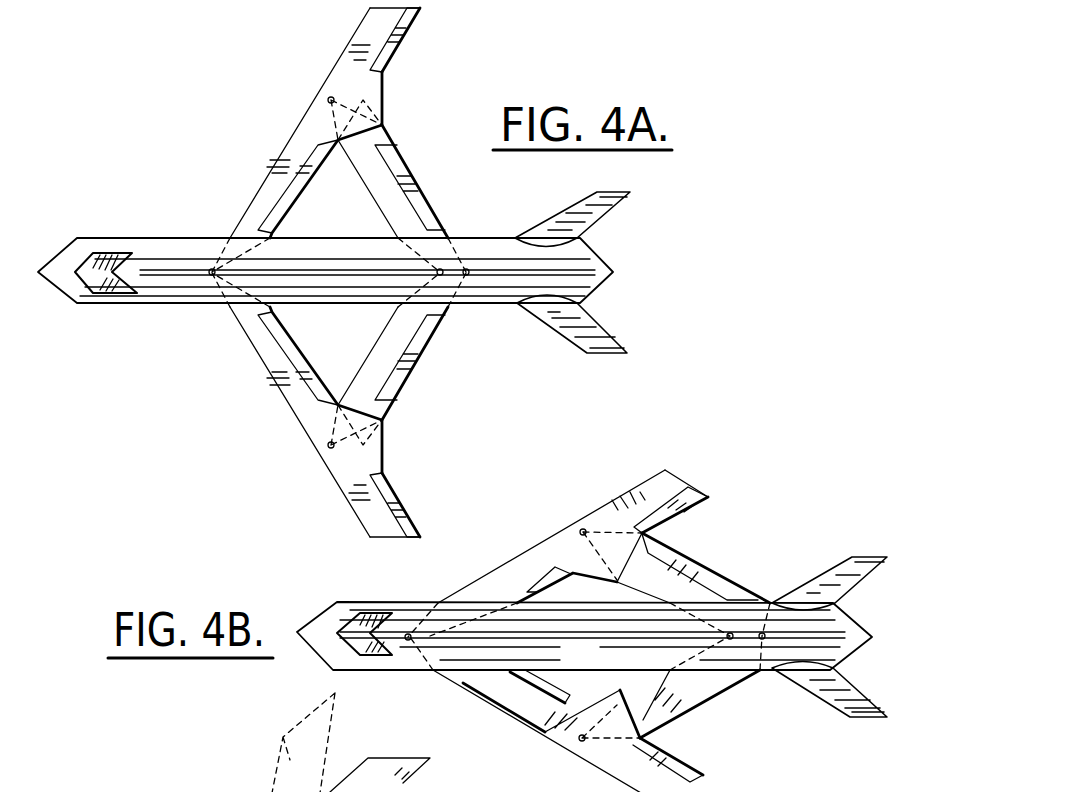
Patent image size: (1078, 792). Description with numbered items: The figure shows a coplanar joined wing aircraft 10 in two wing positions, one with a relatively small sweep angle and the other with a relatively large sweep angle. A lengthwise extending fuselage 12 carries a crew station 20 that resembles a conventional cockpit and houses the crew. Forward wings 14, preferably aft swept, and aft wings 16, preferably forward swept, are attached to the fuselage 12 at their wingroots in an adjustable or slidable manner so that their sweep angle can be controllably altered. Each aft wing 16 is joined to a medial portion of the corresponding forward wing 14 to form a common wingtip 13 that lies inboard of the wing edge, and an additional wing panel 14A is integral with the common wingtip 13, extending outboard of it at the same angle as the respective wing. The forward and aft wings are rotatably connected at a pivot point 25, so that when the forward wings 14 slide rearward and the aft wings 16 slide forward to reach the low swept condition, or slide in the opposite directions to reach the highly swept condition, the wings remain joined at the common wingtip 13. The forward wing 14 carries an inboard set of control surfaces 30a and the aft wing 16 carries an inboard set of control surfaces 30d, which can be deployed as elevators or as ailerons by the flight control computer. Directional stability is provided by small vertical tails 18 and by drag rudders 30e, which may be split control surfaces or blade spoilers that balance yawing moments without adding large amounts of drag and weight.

In FIG. 4A, the joined wing aircraft 10 is at (201, 155).
In FIG. 4B, the joined wing aircraft 10 is at (778, 532).
In FIG. 4A, the fuselage 12 is at (157, 252).
In FIG. 4B, the fuselage 12 is at (365, 603).
In FIG. 4A, the common wingtip 13 is at (330, 118).
In FIG. 4A, the forward wing 14 is at (290, 163).
In FIG. 4B, the forward wing 14 is at (520, 563).
In FIG. 4A, the additional wing panel 14A is at (362, 22).
In FIG. 4B, the additional wing panel 14A is at (665, 485).
In FIG. 4A, the aft wing 16 is at (427, 230).
In FIG. 4B, the aft wing 16 is at (747, 595).
In FIG. 4A, the tail 18 is at (577, 207).
In FIG. 4B, the tail 18 is at (843, 567).
In FIG. 4A, the crew station 20 is at (110, 287).
In FIG. 4B, the crew station 20 is at (342, 630).
In FIG. 4A, the pivot point 25 is at (330, 97).
In FIG. 4B, the pivot point 25 is at (583, 528).
In FIG. 4A, the inboard set of control surfaces 30a is at (307, 182).
In FIG. 4B, the inboard set of control surfaces 30a is at (510, 595).
In FIG. 4A, the inboard set of control surfaces 30d is at (408, 180).
In FIG. 4B, the inboard set of control surfaces 30d is at (700, 567).
In FIG. 4A, the drag rudders 30e is at (412, 25).
In FIG. 4B, the drag rudders 30e is at (685, 502).